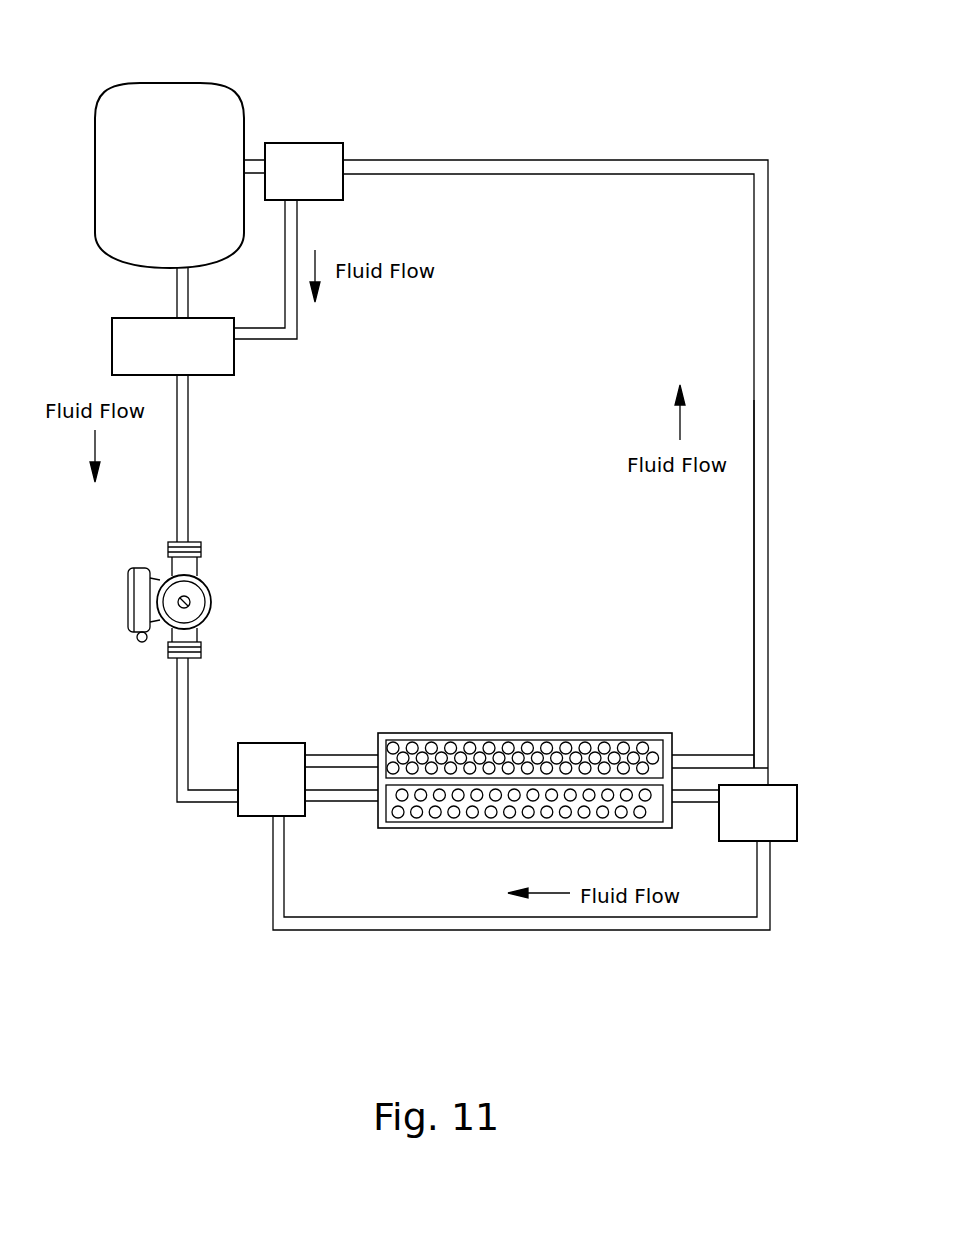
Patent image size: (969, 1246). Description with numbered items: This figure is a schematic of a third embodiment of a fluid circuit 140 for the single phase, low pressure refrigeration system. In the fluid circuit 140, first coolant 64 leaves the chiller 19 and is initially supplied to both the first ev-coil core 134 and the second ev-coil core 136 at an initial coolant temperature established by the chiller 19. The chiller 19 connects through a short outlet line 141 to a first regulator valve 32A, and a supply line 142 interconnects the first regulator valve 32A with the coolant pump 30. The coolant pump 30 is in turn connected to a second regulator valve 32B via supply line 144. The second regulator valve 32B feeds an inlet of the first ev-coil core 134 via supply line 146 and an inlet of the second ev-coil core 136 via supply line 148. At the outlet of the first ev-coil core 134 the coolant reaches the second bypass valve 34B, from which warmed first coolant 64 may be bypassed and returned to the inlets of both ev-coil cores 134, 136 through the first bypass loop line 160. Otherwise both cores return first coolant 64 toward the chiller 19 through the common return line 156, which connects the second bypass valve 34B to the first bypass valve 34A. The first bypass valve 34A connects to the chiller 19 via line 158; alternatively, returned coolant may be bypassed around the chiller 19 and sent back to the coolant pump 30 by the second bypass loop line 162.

The chiller 19 is at (193, 90).
The line 158 is at (253, 158).
The first bypass valve 34A is at (340, 143).
The fluid circuit 140 is at (552, 128).
The common return line 156 is at (769, 272).
The first coolant 64 is at (757, 567).
The tank outlet pipe 141 is at (176, 293).
The second bypass loop line 162 is at (298, 318).
The first regulator valve 32A is at (208, 375).
The supply line 142 is at (190, 480).
The coolant pump 30 is at (212, 590).
The supply line 144 is at (176, 747).
The second regulator valve 32B is at (240, 816).
The supply line 148 is at (355, 755).
The supply line 146 is at (335, 802).
The second ev-coil core 136 is at (527, 733).
The first ev-coil core 134 is at (535, 828).
The second bypass valve 34B is at (778, 785).
The first bypass loop line 160 is at (655, 940).